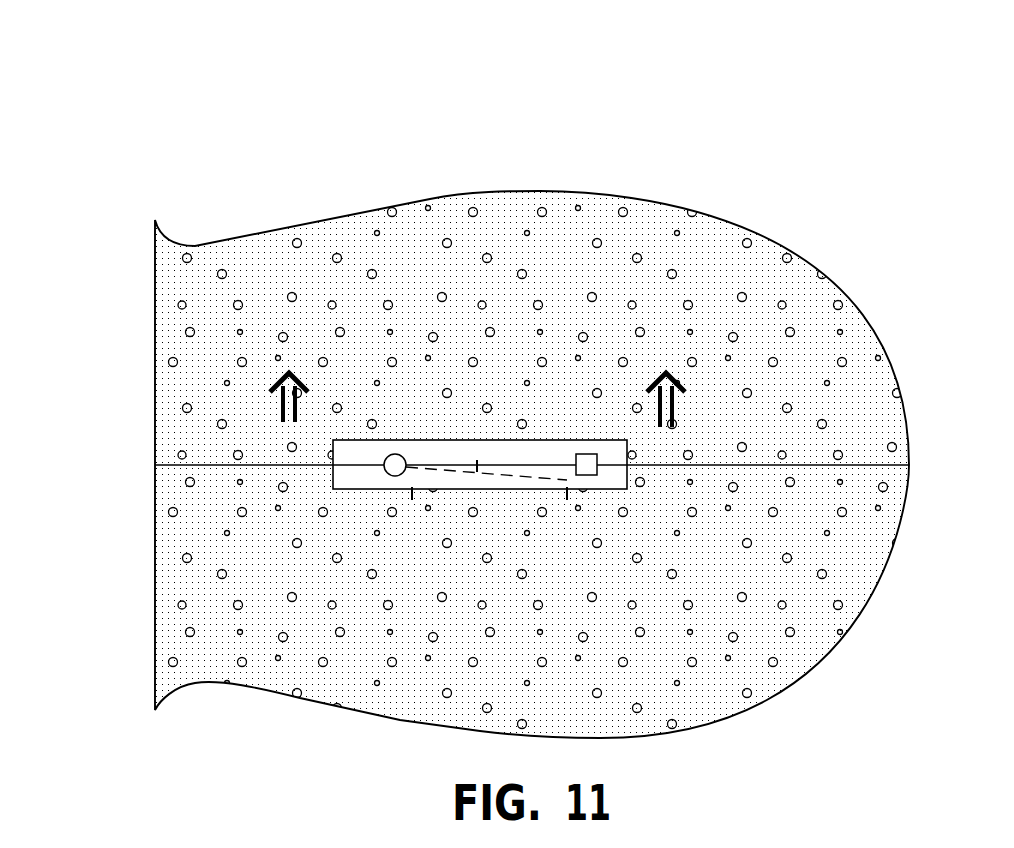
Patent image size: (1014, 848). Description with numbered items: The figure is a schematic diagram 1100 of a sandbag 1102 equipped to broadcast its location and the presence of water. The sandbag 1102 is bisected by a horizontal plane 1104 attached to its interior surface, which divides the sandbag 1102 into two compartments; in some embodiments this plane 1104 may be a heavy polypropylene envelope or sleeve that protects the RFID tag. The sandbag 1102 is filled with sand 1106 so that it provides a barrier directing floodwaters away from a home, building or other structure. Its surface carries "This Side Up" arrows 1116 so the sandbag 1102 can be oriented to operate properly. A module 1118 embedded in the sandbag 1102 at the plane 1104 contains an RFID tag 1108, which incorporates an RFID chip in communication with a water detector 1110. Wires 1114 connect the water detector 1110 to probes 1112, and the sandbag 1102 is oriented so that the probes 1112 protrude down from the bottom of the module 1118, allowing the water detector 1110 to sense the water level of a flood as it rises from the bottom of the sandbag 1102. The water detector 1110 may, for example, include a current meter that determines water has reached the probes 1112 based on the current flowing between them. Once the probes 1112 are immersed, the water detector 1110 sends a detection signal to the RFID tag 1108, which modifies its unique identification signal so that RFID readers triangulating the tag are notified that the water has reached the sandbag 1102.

The schematic diagram 1100 is at (90, 100).
The sandbag 1102 is at (845, 283).
The horizontal plane 1104 is at (887, 465).
The sand 1106 is at (693, 667).
The RFID tag 1108 is at (590, 454).
The water detector 1110 is at (396, 454).
The probes 1112 is at (412, 497).
The wires 1114 is at (477, 463).
The "This Side Up" arrows 1116 is at (277, 402).
The module 1118 is at (511, 489).